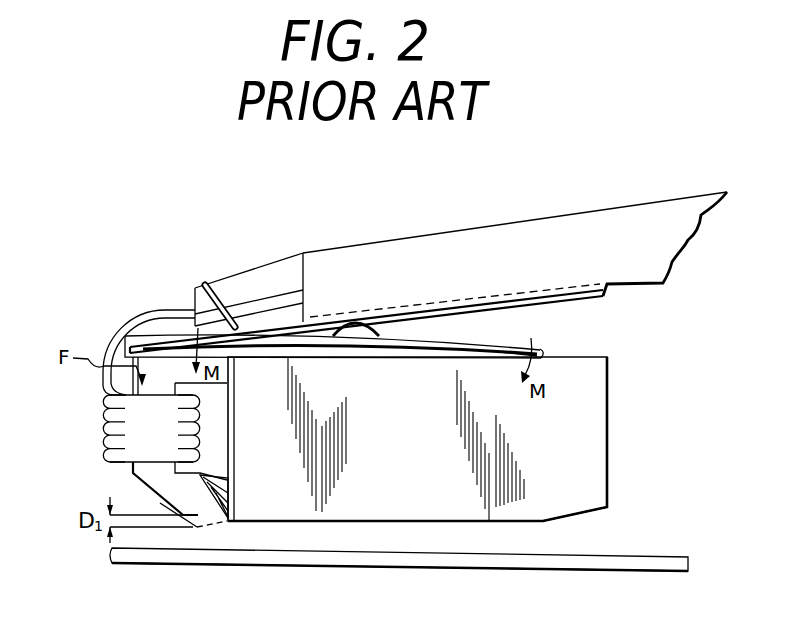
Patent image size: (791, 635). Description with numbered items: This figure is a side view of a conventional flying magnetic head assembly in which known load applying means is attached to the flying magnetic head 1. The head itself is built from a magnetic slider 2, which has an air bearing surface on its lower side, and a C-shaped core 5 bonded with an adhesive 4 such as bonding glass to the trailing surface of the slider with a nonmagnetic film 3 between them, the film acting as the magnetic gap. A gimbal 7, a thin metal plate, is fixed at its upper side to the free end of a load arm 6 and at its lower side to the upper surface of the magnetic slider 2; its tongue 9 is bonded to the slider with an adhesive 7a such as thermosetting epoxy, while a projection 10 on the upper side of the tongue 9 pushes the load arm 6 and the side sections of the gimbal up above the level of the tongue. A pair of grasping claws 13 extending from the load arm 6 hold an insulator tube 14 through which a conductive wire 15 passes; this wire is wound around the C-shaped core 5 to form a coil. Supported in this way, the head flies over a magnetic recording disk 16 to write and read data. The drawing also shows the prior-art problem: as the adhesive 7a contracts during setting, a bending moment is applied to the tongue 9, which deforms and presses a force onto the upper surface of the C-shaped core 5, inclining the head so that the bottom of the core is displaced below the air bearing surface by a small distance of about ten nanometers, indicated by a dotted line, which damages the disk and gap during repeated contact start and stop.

The flying magnetic head 1 is at (607, 385).
The magnetic slider 2 is at (578, 460).
The nonmagnetic film 3 is at (228, 521).
The adhesive 4 is at (200, 505).
The C-shaped core 5 is at (143, 476).
The load arm 6 is at (413, 266).
The gimbal 7 is at (443, 345).
The adhesive 7a is at (447, 350).
The tongue 9 is at (400, 343).
The projection 10 is at (352, 330).
The grasping claws 13 is at (207, 286).
The insulator tube 14 is at (258, 290).
The conductive wire 15 is at (135, 322).
The magnetic recording disk 16 is at (645, 562).